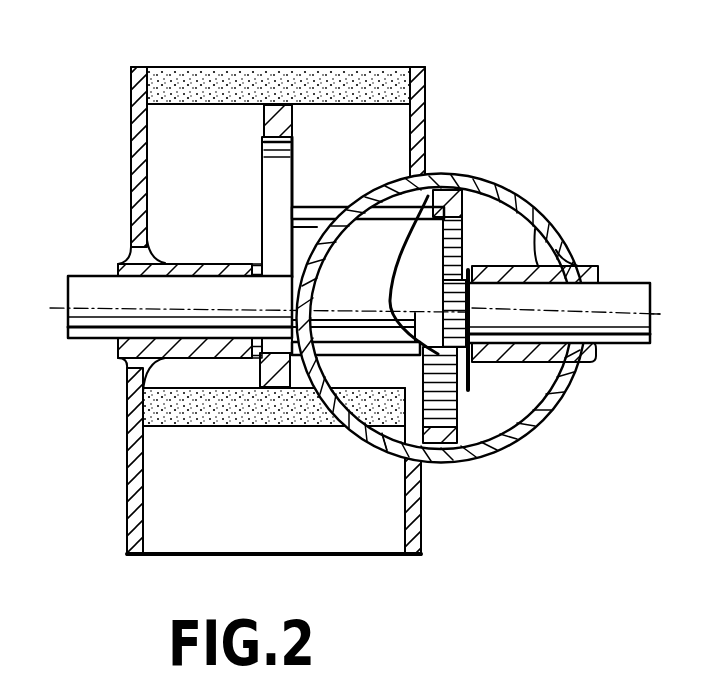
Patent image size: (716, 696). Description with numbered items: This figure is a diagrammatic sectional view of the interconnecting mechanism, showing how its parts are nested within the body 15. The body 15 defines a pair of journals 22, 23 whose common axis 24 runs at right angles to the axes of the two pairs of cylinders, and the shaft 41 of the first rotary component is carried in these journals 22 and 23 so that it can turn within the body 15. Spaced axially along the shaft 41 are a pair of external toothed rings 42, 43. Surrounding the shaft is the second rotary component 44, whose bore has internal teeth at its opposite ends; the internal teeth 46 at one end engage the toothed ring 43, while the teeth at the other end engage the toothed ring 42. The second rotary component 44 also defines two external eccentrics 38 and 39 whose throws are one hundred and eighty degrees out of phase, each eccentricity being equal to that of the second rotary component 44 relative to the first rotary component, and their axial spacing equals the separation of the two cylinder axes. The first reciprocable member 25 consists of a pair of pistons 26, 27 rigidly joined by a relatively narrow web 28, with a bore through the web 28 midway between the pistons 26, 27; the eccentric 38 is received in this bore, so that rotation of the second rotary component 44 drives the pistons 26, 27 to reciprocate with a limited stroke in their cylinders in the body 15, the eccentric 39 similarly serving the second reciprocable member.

The body 15 is at (462, 482).
The journal 22 is at (162, 263).
The journal 23 is at (534, 215).
The common axis 24 is at (56, 308).
The first reciprocable member 25 is at (256, 128).
The piston 26 is at (316, 70).
The piston 27 is at (185, 427).
The web 28 is at (296, 126).
The external eccentric 38 is at (272, 190).
The external eccentric 39 is at (385, 443).
The shaft 41 is at (100, 292).
The external toothed ring 42 is at (246, 292).
The external toothed ring 43 is at (466, 354).
The second rotary component 44 is at (388, 254).
The internal teeth 46 is at (455, 236).